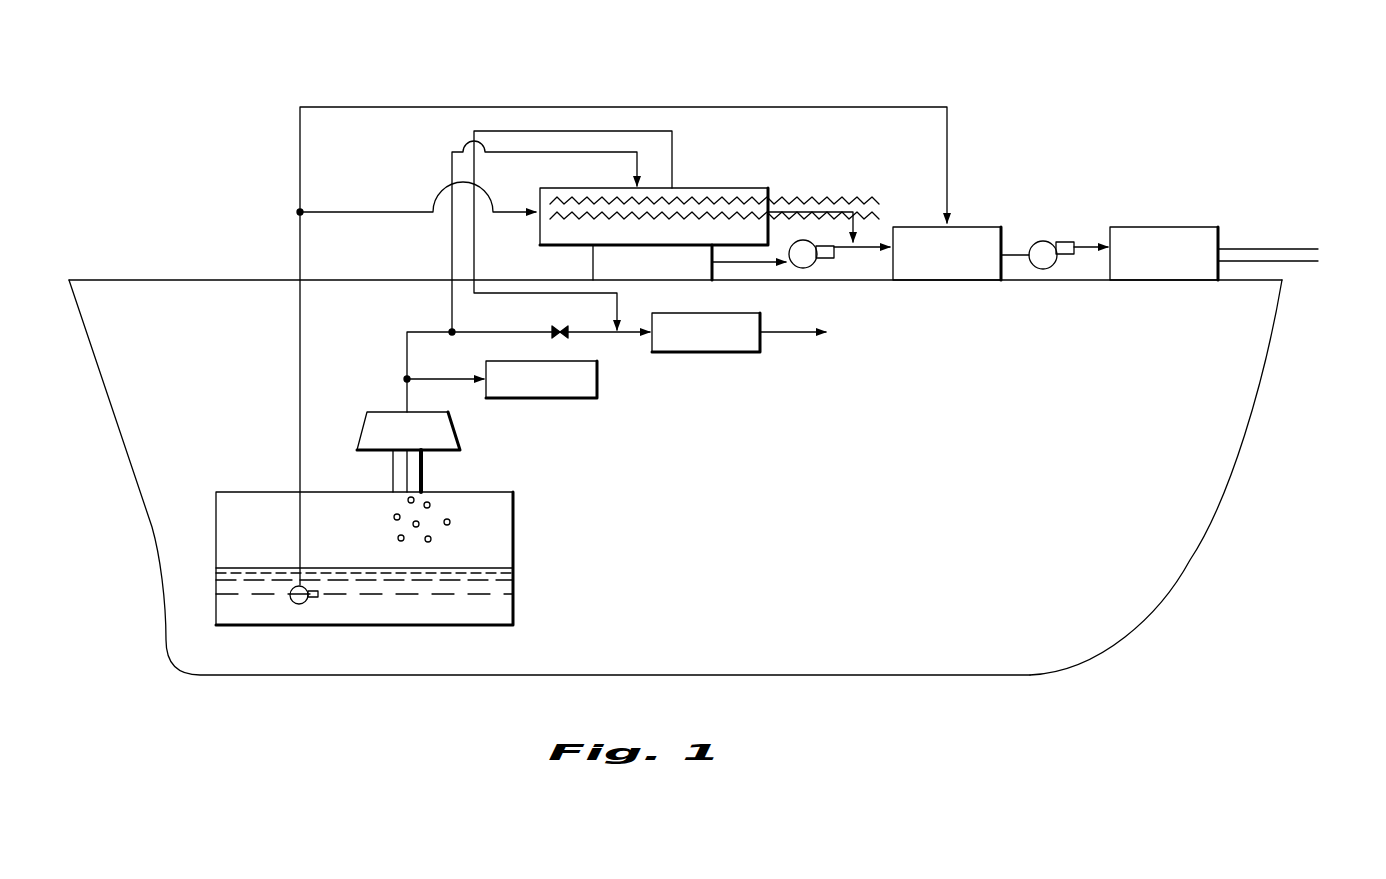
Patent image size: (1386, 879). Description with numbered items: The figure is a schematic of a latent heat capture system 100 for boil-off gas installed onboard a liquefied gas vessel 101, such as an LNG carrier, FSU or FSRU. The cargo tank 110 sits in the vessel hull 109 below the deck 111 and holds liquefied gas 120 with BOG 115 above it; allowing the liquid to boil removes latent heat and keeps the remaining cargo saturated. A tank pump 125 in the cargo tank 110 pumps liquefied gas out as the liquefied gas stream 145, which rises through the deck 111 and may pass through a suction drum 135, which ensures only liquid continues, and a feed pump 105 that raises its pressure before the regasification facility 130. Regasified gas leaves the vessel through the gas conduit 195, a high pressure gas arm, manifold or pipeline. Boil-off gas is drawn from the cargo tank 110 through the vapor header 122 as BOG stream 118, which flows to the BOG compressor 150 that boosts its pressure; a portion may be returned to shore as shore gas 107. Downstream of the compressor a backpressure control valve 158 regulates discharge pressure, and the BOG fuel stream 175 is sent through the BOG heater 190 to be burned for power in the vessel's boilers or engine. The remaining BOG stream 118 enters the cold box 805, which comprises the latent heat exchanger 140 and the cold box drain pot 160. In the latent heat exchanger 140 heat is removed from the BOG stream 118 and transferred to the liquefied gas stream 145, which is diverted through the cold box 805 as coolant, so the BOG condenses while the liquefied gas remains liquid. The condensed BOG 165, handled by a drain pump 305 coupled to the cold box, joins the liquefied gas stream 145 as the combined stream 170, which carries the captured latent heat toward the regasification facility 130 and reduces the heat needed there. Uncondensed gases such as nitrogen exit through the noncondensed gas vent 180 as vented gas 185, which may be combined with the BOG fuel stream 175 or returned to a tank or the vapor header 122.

The latent heat capture system 100 is at (198, 70).
The liquefied gas vessel 101 is at (1168, 692).
The feed pump 105 is at (1042, 241).
The shore gas 107 is at (558, 390).
The vessel hull 109 is at (152, 527).
The cargo tank 110 is at (513, 568).
The deck 111 is at (188, 280).
The BOG 115 is at (366, 542).
The BOG stream 118 is at (425, 332).
The liquefied gas 120 is at (376, 611).
The vapor header 122 is at (424, 470).
The tank pump 125 is at (295, 606).
The regasification facility 130 is at (1180, 264).
The suction drum 135 is at (963, 264).
The latent heat exchanger 140 is at (540, 238).
The liquefied gas stream 145 is at (807, 107).
The BOG compressor 150 is at (423, 442).
The backpressure control valve 158 is at (562, 326).
The cold box drain pot 160 is at (593, 270).
The condensed BOG 165 is at (763, 262).
The combined stream 170 is at (866, 247).
The BOG fuel stream 175 is at (601, 335).
The noncondensed gas vent 180 is at (678, 186).
The vented gas 185 is at (675, 162).
The BOG heater 190 is at (723, 343).
The gas conduit 195 is at (1270, 249).
The drain pump 305 is at (826, 244).
The cold box 805 is at (401, 226).